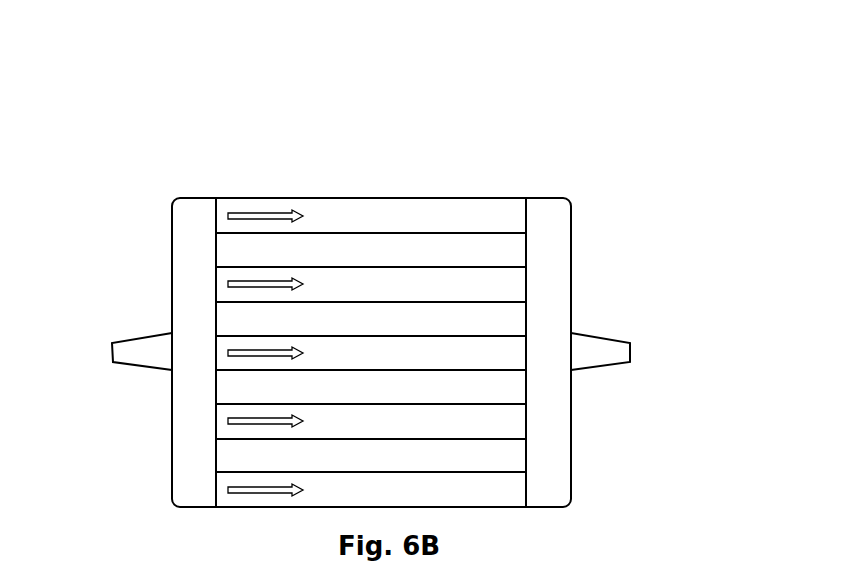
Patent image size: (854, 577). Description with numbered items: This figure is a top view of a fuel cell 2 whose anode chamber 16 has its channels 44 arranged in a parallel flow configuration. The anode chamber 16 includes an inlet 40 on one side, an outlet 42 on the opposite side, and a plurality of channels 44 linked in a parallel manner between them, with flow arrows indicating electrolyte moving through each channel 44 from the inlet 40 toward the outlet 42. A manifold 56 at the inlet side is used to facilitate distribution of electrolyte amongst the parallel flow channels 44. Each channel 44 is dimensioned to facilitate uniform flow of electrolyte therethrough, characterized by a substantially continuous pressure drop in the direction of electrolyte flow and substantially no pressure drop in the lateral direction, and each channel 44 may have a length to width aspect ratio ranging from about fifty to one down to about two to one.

The fuel cell 2 is at (206, 101).
The anode chamber 16 is at (317, 182).
The inlet 40 is at (113, 347).
The outlet 42 is at (630, 352).
The channels 44 is at (403, 198).
The manifold 56 is at (172, 222).